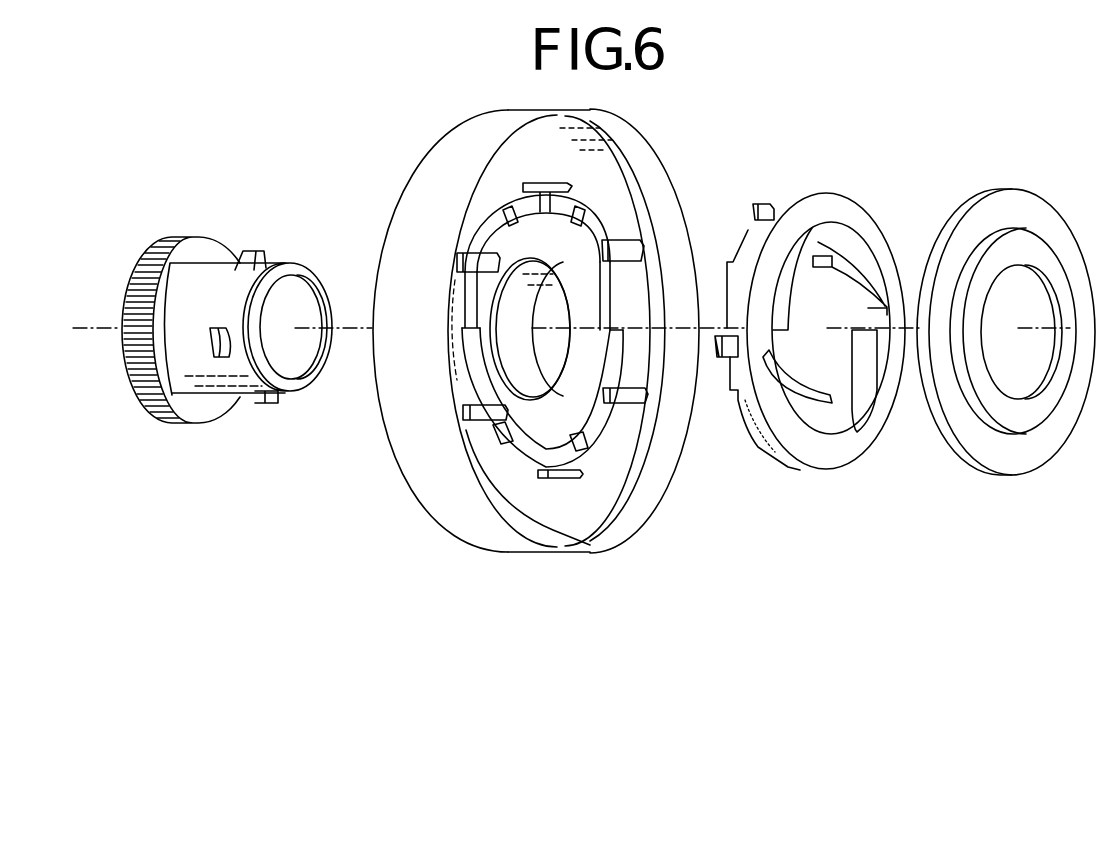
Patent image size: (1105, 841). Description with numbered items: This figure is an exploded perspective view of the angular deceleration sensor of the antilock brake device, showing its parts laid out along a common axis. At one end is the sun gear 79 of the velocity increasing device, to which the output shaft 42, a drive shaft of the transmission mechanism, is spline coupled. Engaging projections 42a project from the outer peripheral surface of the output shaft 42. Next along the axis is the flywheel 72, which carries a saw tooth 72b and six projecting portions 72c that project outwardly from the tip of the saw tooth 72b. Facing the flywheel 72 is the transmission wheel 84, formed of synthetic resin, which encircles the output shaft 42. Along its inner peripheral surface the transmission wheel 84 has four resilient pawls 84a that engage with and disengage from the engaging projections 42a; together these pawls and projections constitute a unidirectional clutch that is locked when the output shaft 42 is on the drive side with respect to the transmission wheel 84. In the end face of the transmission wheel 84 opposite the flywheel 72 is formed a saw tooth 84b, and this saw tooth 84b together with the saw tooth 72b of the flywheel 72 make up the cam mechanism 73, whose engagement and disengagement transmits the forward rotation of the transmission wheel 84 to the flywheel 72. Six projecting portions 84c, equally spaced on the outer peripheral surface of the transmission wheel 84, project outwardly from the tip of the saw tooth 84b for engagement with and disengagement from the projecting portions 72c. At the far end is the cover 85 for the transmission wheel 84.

The sun gear 79 is at (190, 237).
The output shaft 42 is at (308, 273).
The engaging projections 42a is at (257, 252).
The flywheel 72 is at (540, 113).
The saw tooth 72b is at (580, 434).
The projecting portions 72c is at (566, 177).
The cam mechanism 73 is at (642, 454).
The transmission wheel 84 is at (838, 195).
The resilient pawls 84a is at (790, 326).
The saw tooth 84b is at (733, 395).
The projecting portions 84c is at (773, 204).
The cover 85 is at (1026, 190).